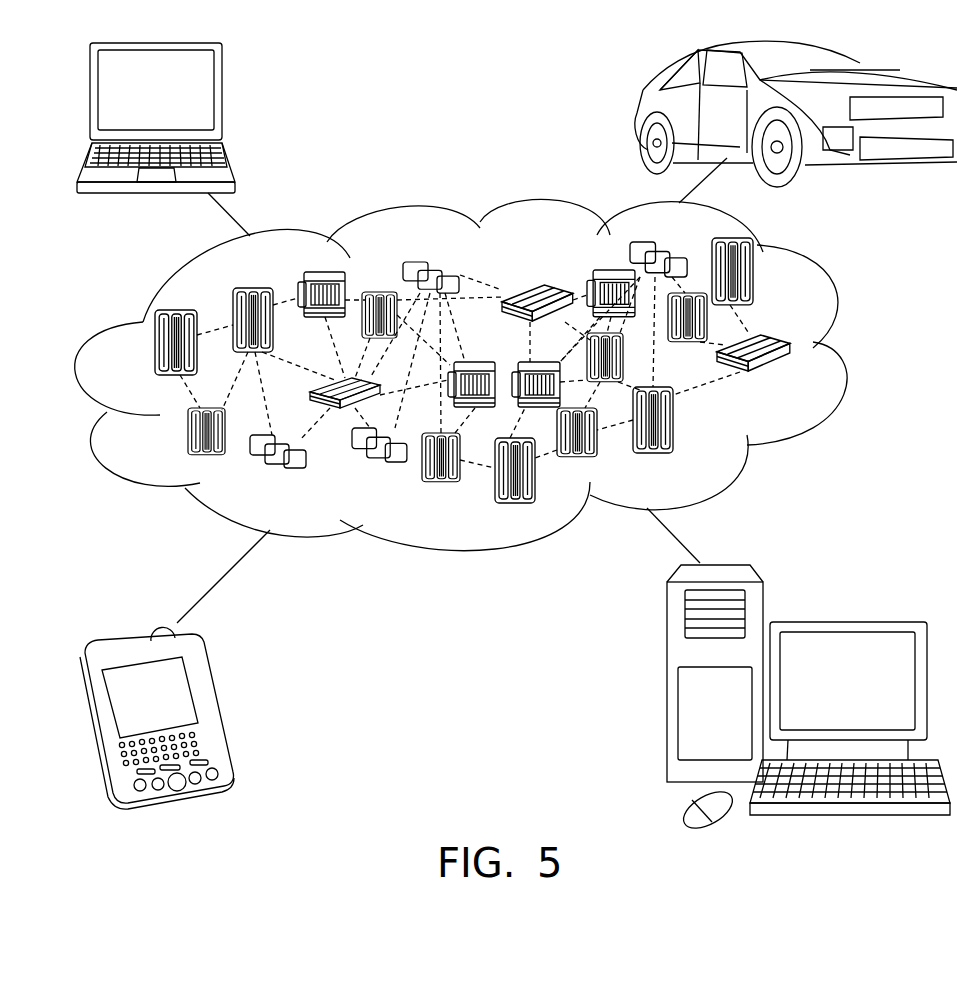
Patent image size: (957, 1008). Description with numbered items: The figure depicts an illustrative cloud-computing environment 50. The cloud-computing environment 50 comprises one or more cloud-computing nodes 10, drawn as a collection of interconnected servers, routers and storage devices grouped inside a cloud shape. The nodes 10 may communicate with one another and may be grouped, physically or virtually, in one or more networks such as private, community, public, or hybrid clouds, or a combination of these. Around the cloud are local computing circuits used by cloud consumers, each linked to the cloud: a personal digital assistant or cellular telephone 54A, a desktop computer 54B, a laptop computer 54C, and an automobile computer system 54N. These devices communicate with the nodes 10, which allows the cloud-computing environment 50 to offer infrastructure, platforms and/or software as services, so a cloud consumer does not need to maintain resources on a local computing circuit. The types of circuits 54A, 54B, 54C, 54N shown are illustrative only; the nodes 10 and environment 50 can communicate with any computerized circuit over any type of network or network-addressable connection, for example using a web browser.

The cloud-computing nodes 10 is at (790, 380).
The cloud-computing environment 50 is at (850, 355).
The personal digital assistant (PDA) or cellular telephone 54A is at (212, 708).
The desktop computer 54B is at (847, 620).
The laptop computer 54C is at (222, 96).
The automobile computer system 54N is at (640, 112).